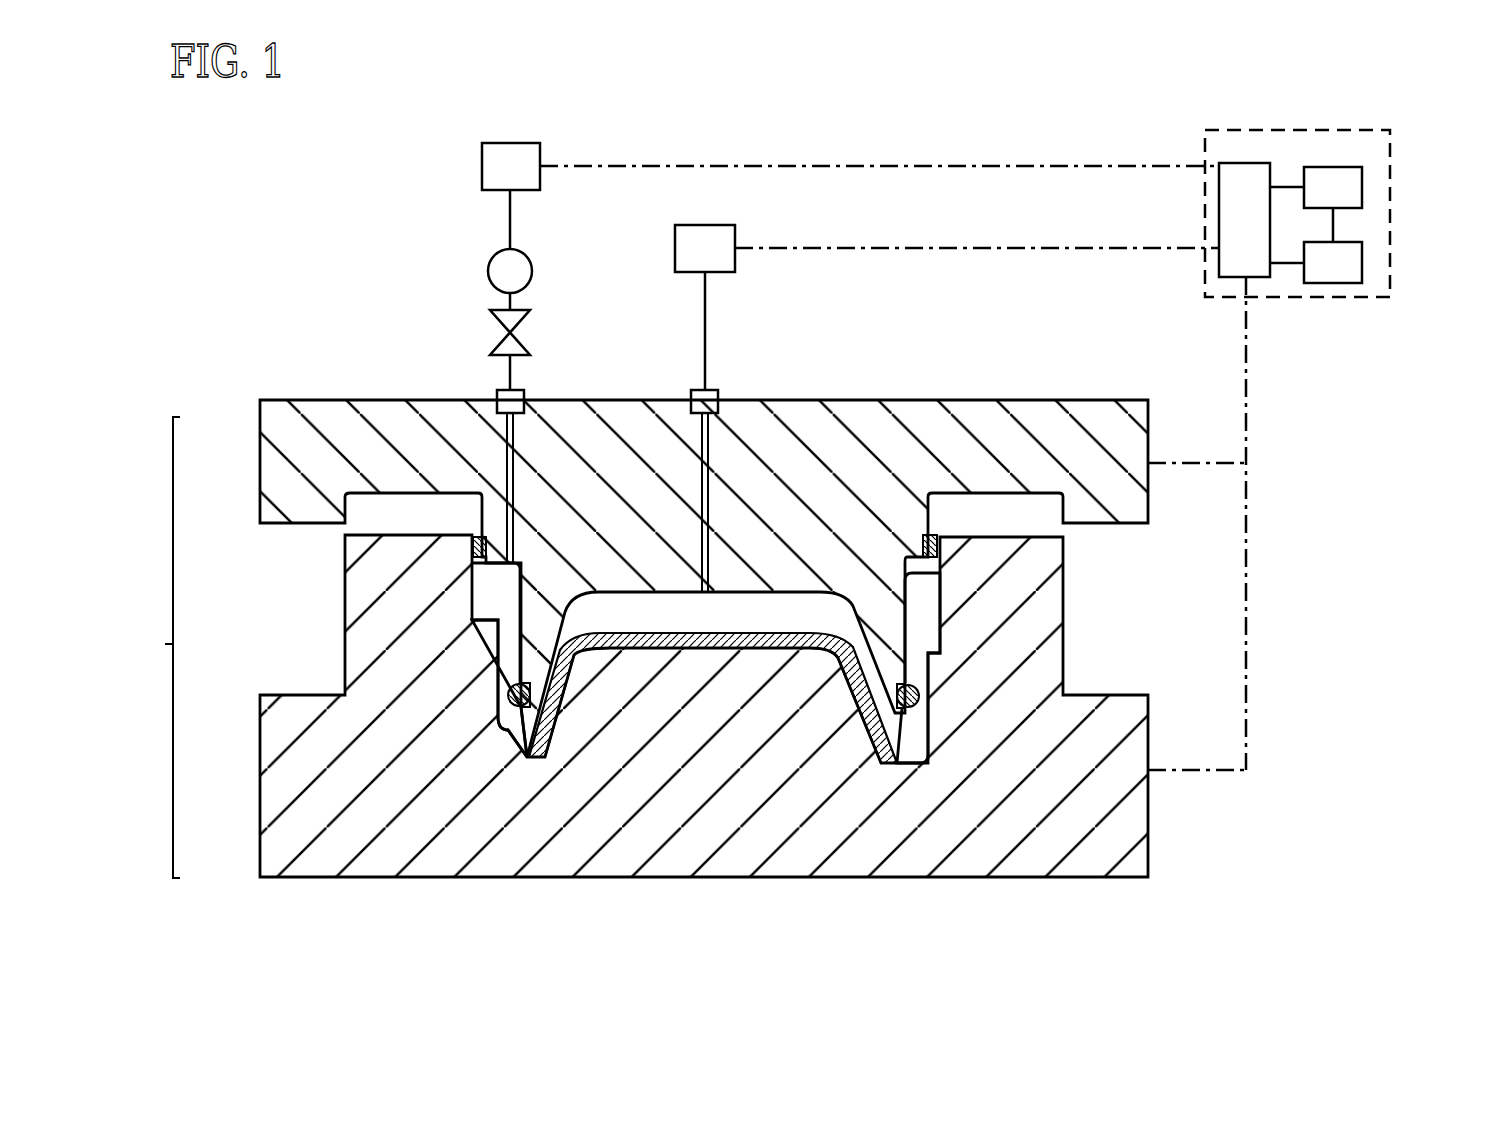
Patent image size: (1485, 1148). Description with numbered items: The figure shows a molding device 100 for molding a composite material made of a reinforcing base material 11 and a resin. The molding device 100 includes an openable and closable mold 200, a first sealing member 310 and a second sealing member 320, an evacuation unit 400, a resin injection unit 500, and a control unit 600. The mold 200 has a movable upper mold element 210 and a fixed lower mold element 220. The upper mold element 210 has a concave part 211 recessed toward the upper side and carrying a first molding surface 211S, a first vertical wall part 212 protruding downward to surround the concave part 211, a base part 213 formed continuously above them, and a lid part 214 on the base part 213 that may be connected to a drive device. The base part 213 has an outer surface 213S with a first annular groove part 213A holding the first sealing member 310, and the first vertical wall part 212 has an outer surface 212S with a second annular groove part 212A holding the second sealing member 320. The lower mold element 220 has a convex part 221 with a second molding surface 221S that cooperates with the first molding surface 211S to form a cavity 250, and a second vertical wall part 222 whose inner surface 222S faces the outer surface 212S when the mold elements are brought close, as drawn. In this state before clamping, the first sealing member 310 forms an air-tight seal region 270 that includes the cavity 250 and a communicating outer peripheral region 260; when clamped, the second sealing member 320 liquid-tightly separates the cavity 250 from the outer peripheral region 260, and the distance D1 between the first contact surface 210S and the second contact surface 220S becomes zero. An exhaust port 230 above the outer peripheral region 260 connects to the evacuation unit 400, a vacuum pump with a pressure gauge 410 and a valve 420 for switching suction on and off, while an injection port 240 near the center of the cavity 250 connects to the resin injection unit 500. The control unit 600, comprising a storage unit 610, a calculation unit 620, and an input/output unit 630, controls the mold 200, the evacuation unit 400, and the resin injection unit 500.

The molding device 100 is at (114, 146).
The mold 200 is at (146, 647).
The upper mold element 210 is at (262, 437).
The concave part 211 is at (766, 594).
The first molding surface 211S is at (626, 593).
The first vertical wall part 212 is at (890, 627).
The second annular groove part 212A is at (906, 740).
The outer surface of the first vertical wall part 212S is at (906, 655).
The base part 213 is at (495, 515).
The first annular groove part 213A is at (926, 535).
The outer surface of the base part 213S is at (470, 540).
The lid part 214 is at (795, 435).
The first contact surface 210S is at (1018, 493).
The lower mold element 220 is at (262, 832).
The second contact surface 220S is at (1005, 537).
The convex part 221 is at (803, 683).
The second molding surface 221S is at (713, 645).
The second vertical wall part 222 is at (398, 588).
The inner surface of the second vertical wall part 222S is at (475, 568).
The exhaust port 230 is at (513, 563).
The injection port 240 is at (696, 598).
The cavity 250 is at (668, 648).
The outer peripheral region 260 is at (515, 735).
The seal region 270 is at (500, 905).
The first sealing member 310 is at (940, 541).
The second sealing member 320 is at (918, 696).
The evacuation unit 400 is at (483, 172).
The pressure gauge 410 is at (488, 272).
The valve 420 is at (494, 343).
The resin injection unit 500 is at (678, 252).
The control unit 600 is at (1300, 130).
The storage unit 610 is at (1350, 189).
The calculation unit 620 is at (1350, 259).
The input/output unit 630 is at (1232, 201).
The reinforcing base material 11 is at (672, 633).
The distance D1 is at (1025, 493).